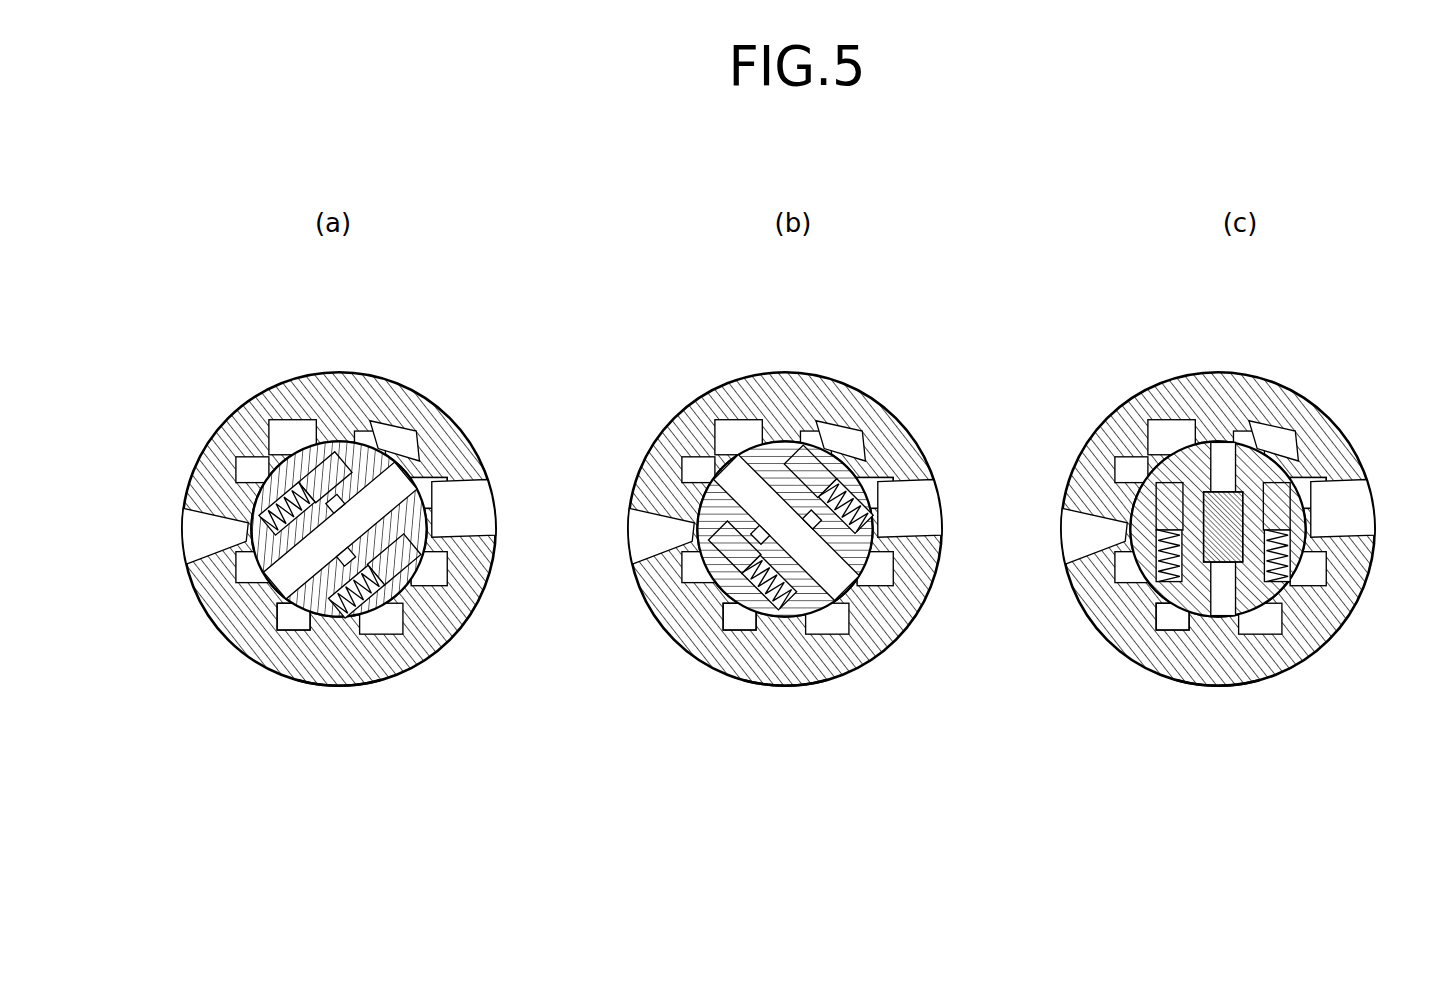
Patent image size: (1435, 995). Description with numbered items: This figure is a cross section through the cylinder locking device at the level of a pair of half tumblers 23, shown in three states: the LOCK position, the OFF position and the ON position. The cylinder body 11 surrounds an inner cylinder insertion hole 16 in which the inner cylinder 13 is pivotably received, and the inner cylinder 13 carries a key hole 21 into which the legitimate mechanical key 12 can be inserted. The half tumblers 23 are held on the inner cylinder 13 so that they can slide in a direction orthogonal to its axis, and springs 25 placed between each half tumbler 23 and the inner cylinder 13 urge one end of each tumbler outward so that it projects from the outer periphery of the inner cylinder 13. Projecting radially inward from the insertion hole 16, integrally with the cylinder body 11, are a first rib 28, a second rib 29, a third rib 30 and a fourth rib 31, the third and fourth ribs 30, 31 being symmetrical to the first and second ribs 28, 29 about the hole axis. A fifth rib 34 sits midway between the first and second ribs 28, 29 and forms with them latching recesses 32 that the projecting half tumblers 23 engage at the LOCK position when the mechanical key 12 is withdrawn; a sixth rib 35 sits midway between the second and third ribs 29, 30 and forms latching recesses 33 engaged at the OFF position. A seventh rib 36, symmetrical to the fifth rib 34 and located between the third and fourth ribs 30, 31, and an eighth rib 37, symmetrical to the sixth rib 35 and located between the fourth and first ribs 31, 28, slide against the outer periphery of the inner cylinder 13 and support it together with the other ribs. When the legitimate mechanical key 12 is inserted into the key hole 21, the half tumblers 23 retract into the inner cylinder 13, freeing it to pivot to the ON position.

The cylinder body 11 is at (247, 424).
The mechanical key 12 is at (1257, 513).
The inner cylinder 13 is at (343, 455).
The inner cylinder insertion hole 16 is at (439, 571).
The key hole 21 is at (370, 681).
The half tumbler 23 is at (236, 520).
The spring 25 is at (385, 441).
The first rib 28 is at (308, 685).
The second rib 29 is at (243, 488).
The third rib 30 is at (300, 386).
The fourth rib 31 is at (447, 493).
The latching recess 32 is at (230, 565).
The latching recess 33 is at (282, 441).
The fifth rib 34 is at (292, 623).
The sixth rib 35 is at (251, 465).
The seventh rib 36 is at (421, 454).
The eighth rib 37 is at (432, 643).